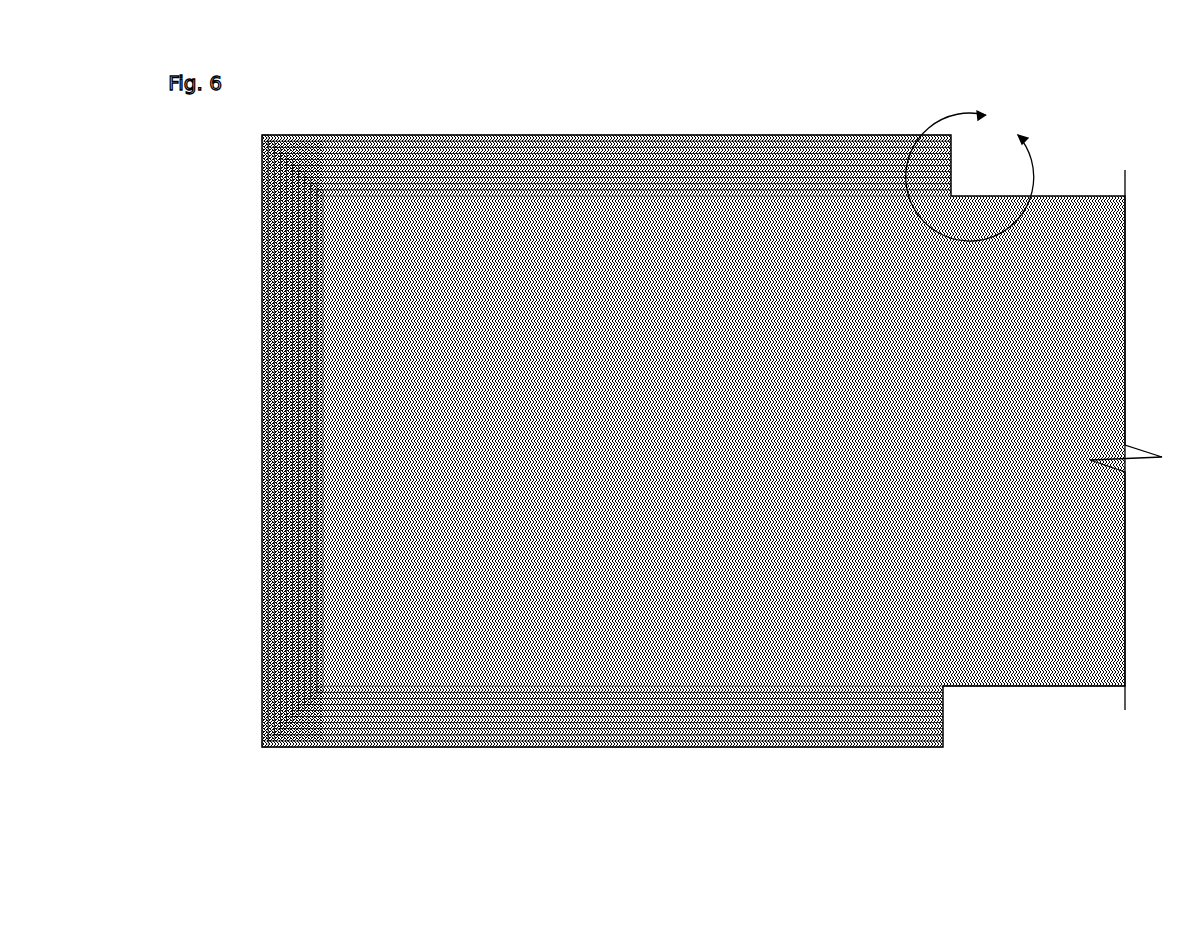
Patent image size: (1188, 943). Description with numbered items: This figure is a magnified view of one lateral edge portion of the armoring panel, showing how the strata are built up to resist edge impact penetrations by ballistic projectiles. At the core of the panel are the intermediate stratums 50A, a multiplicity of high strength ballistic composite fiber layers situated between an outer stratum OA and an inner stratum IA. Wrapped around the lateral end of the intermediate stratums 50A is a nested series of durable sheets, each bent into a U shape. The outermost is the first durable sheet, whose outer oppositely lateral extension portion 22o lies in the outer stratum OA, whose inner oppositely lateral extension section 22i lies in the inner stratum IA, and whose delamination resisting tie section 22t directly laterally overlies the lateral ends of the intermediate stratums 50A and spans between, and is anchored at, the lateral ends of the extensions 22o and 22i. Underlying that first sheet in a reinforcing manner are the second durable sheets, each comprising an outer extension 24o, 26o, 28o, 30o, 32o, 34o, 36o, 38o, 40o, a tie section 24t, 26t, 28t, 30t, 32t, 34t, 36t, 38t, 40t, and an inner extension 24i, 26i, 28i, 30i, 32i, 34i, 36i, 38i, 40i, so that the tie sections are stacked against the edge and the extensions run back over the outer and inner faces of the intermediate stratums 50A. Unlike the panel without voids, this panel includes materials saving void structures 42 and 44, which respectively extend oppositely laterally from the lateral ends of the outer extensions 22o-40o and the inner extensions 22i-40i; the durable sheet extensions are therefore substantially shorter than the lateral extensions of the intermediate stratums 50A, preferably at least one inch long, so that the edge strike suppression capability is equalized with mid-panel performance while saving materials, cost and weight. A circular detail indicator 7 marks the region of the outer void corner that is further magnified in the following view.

The delamination resisting tie section 22t is at (262, 182).
The tie section of second durable sheet 24t is at (268, 235).
The tie section of second durable sheet 26t is at (275, 288).
The tie section of second durable sheet 28t is at (281, 341).
The tie section of second durable sheet 30t is at (288, 394).
The tie section of second durable sheet 32t is at (294, 447).
The tie section of second durable sheet 34t is at (300, 500).
The tie section of second durable sheet 36t is at (307, 553).
The tie section of second durable sheet 38t is at (313, 606).
The tie section of second durable sheet 40t is at (320, 659).
The outer oppositely lateral extension portion 22o is at (415, 137).
The outer extension of second durable sheet 24o is at (469, 143).
The outer extension of second durable sheet 26o is at (523, 149).
The outer extension of second durable sheet 28o is at (577, 155).
The outer extension of second durable sheet 30o is at (631, 161).
The outer extension of second durable sheet 32o is at (685, 167).
The outer extension of second durable sheet 34o is at (739, 173).
The outer extension of second durable sheet 36o is at (793, 179).
The outer extension of second durable sheet 38o is at (847, 185).
The outer extension of second durable sheet 40o is at (901, 191).
The inner oppositely lateral extension section 22i is at (362, 742).
The inner extension of second durable sheet 24i is at (415, 736).
The inner extension of second durable sheet 26i is at (468, 730).
The inner extension of second durable sheet 28i is at (521, 724).
The inner extension of second durable sheet 30i is at (574, 718).
The inner extension of second durable sheet 32i is at (627, 712).
The inner extension of second durable sheet 34i is at (680, 706).
The inner extension of second durable sheet 36i is at (733, 700).
The inner extension of second durable sheet 38i is at (786, 694).
The inner extension of second durable sheet 40i is at (839, 688).
The intermediate stratums 50A is at (475, 332).
The outer stratum OA is at (899, 195).
The inner stratum IA is at (876, 748).
The materials saving void structure 42 is at (1050, 170).
The materials saving void structure 44 is at (1001, 712).
The detail view reference for FIG. 7 is at (970, 176).